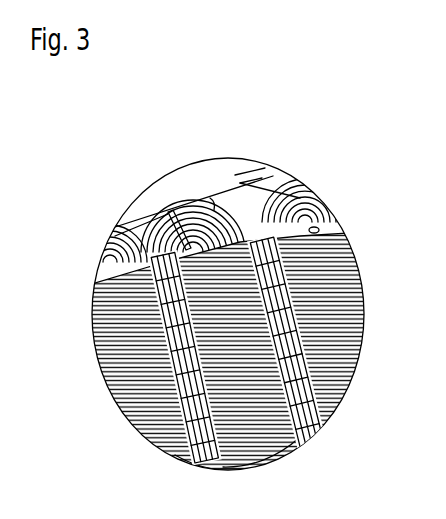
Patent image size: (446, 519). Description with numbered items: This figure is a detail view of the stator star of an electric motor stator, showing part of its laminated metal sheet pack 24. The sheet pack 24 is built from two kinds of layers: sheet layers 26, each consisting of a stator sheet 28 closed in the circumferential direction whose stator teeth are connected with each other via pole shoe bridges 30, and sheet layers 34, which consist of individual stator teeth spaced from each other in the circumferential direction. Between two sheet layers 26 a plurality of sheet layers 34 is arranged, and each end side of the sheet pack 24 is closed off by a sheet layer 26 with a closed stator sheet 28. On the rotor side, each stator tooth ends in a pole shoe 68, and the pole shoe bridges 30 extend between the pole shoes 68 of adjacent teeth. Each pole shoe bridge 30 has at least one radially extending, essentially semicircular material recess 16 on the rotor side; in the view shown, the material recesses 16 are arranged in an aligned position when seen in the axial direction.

The material recess 16 is at (117, 221).
The metal sheet pack 24 is at (163, 202).
The sheet layer 26 is at (329, 228).
The stator sheet 28 is at (305, 200).
The pole shoe bridge 30 is at (273, 185).
The sheet layer 34 is at (350, 258).
The pole shoe 68 is at (212, 200).